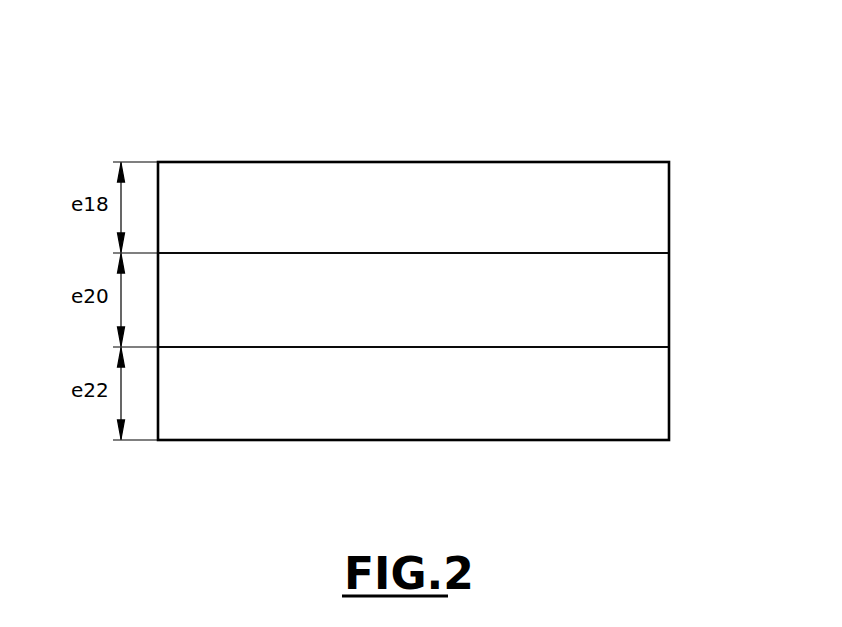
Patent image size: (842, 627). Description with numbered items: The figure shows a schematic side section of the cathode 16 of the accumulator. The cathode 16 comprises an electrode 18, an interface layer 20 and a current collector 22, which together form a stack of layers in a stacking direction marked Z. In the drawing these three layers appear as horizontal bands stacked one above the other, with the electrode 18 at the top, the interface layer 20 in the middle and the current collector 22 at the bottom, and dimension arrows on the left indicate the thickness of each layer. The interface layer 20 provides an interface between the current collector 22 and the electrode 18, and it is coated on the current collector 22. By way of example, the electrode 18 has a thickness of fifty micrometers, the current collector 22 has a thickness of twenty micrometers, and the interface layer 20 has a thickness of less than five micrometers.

The cathode 16 is at (697, 150).
The electrode 18 is at (635, 218).
The interface layer 20 is at (637, 323).
The current collector 22 is at (637, 405).